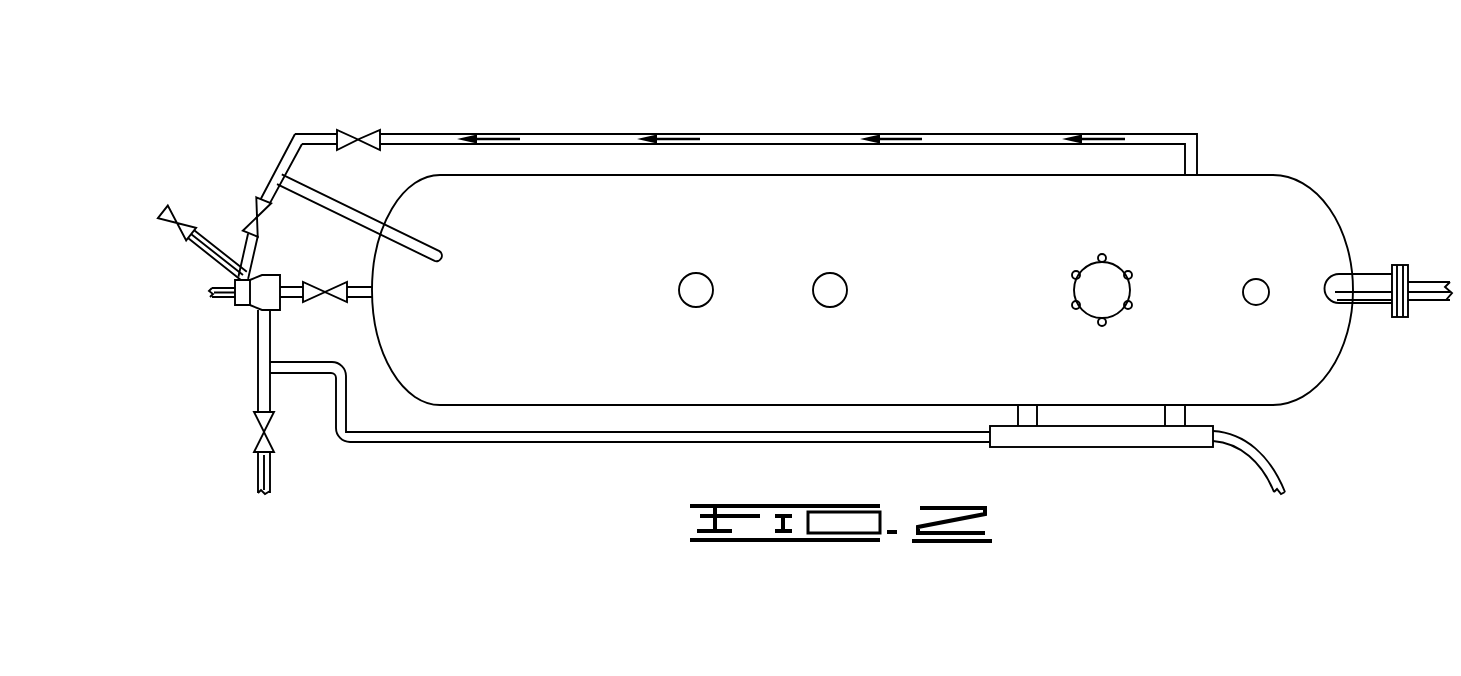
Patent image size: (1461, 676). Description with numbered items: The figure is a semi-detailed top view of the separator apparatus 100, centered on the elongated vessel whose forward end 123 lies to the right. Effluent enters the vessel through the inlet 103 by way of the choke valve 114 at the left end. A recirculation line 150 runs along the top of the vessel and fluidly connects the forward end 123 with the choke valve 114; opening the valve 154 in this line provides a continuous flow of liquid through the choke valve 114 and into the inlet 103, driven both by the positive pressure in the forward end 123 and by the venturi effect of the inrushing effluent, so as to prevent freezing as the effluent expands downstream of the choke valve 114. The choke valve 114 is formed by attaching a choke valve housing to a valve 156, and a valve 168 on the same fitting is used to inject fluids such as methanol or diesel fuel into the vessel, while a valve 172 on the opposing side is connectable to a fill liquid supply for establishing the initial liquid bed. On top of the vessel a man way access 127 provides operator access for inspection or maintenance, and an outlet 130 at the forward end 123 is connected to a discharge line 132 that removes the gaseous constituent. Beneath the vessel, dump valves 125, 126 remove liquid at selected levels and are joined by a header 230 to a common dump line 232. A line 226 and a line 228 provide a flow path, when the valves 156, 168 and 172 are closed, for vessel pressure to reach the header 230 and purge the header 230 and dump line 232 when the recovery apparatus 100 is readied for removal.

The separator apparatus 100 is at (1323, 445).
The inlet 103 is at (326, 284).
The choke valve 114 is at (252, 312).
The forward end 123 is at (1233, 175).
The dump valve 125 is at (1015, 412).
The dump valve 126 is at (1187, 415).
The man way access 127 is at (1086, 318).
The outlet 130 is at (1362, 307).
The discharge line 132 is at (1430, 282).
The recirculation line 150 is at (1003, 134).
The valve 154 is at (253, 210).
The valve 156 is at (308, 302).
The valve 168 is at (178, 215).
The valve 172 is at (262, 438).
The line 226 is at (413, 253).
The line 228 is at (402, 443).
The header 230 is at (1072, 448).
The common dump line 232 is at (1253, 462).